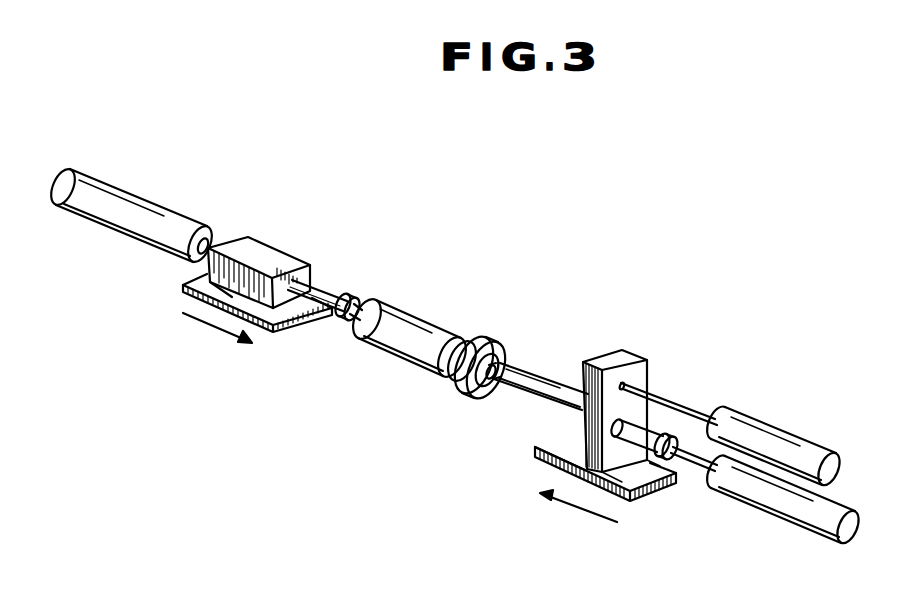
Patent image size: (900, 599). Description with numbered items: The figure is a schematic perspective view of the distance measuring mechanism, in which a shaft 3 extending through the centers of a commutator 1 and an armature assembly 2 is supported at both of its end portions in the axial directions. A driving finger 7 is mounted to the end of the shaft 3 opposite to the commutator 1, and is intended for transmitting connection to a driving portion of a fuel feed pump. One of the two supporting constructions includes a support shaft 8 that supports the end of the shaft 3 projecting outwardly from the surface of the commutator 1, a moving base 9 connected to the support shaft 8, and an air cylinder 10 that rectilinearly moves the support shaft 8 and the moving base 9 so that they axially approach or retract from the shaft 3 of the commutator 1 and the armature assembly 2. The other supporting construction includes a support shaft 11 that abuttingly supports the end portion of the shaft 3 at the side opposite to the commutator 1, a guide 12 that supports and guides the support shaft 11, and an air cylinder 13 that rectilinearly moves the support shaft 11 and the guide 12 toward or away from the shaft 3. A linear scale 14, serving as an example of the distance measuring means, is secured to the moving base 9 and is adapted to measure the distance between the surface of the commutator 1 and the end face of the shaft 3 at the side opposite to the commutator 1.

The commutator 1 is at (462, 390).
The armature assembly 2 is at (402, 361).
The shaft 3 is at (495, 388).
The driving finger 7 is at (345, 325).
The support shaft 8 is at (522, 368).
The moving base 9 is at (632, 356).
The air cylinder 10 is at (758, 505).
The support shaft 11 is at (323, 286).
The guide 12 is at (270, 243).
The air cylinder 13 is at (145, 193).
The linear scale 14 is at (770, 424).